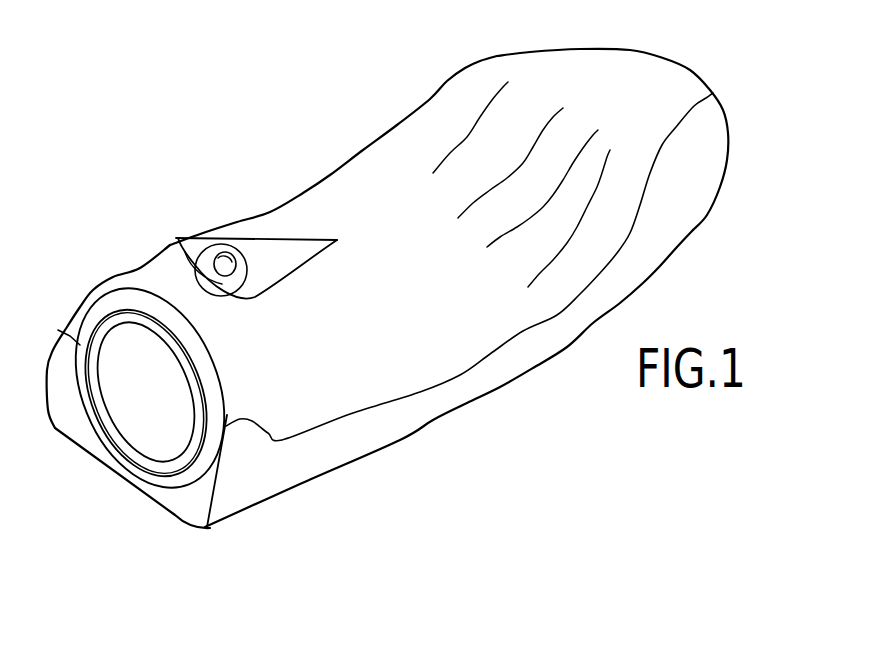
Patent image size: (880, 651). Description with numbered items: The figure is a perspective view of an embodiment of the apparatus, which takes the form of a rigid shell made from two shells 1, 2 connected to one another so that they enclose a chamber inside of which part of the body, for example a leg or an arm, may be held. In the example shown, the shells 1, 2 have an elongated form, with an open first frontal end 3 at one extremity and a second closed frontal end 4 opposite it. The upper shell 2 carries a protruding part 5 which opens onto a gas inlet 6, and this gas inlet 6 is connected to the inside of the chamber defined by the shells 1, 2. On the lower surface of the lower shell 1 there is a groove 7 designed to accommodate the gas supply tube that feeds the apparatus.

The shell 1 is at (317, 455).
The upper shell 2 is at (457, 335).
The open first frontal end 3 is at (100, 473).
The second closed frontal end 4 is at (738, 110).
The protruding part 5 is at (268, 250).
The gas inlet 6 is at (173, 268).
The groove 7 is at (172, 519).